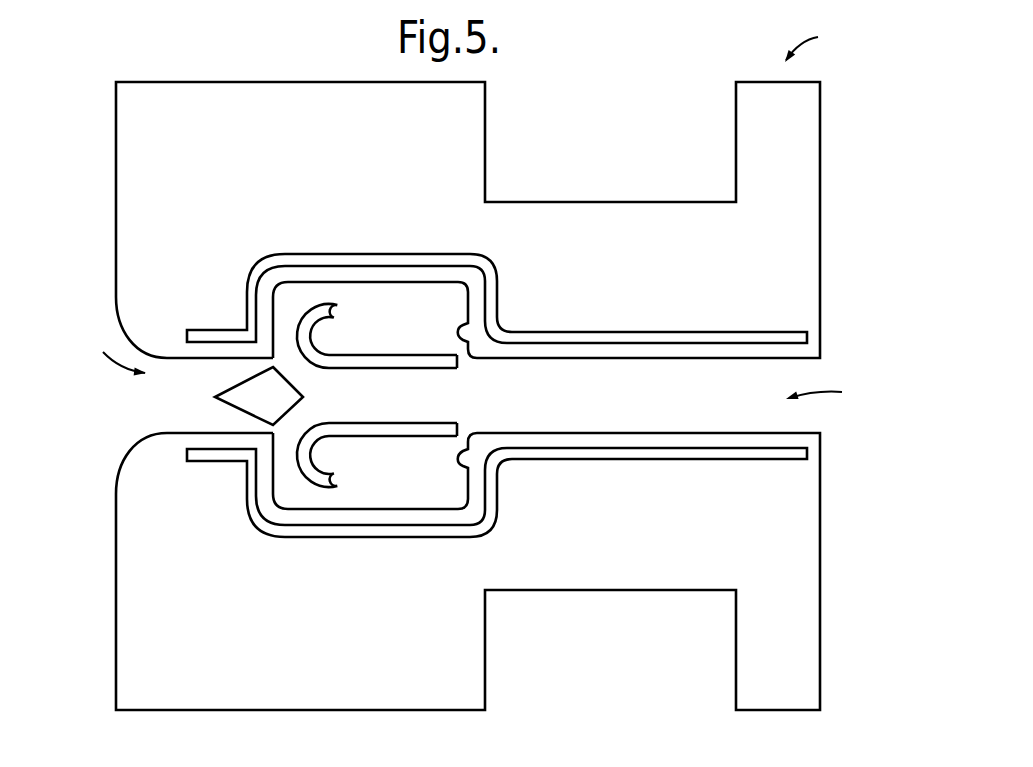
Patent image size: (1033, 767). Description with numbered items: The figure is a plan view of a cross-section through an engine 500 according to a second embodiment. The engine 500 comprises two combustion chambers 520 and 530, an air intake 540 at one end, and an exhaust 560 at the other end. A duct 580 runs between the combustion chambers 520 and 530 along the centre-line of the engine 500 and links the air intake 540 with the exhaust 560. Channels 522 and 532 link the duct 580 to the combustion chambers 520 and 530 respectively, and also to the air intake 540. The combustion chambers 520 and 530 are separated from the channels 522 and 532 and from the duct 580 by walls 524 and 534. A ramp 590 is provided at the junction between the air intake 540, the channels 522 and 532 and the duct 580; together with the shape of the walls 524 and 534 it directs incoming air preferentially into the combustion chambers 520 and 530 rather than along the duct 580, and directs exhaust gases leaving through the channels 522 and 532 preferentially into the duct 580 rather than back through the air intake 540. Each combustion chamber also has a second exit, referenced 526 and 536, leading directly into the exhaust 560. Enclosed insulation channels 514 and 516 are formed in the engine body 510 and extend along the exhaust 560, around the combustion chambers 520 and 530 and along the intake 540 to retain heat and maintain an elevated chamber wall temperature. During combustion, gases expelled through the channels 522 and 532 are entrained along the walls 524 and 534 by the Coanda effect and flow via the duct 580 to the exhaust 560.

The engine 500 is at (821, 42).
The engine body 510 is at (124, 124).
The insulation channel 514 is at (726, 455).
The insulation channel 516 is at (662, 338).
The combustion chamber 520 is at (448, 298).
The channel 522 is at (292, 306).
The wall 524 is at (397, 353).
The exit 526 is at (459, 363).
The combustion chamber 530 is at (436, 485).
The channel 532 is at (283, 460).
The wall 534 is at (397, 440).
The exit 536 is at (460, 429).
The air intake 540 is at (107, 356).
The exhaust 560 is at (841, 396).
The duct 580 is at (406, 409).
The ramp 590 is at (215, 397).